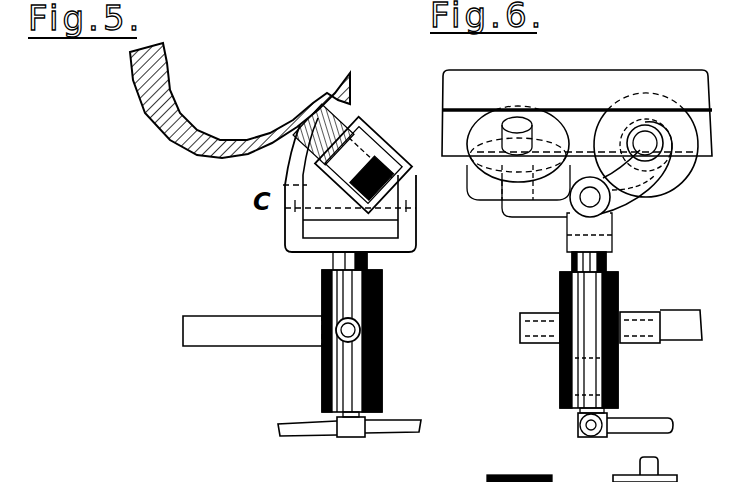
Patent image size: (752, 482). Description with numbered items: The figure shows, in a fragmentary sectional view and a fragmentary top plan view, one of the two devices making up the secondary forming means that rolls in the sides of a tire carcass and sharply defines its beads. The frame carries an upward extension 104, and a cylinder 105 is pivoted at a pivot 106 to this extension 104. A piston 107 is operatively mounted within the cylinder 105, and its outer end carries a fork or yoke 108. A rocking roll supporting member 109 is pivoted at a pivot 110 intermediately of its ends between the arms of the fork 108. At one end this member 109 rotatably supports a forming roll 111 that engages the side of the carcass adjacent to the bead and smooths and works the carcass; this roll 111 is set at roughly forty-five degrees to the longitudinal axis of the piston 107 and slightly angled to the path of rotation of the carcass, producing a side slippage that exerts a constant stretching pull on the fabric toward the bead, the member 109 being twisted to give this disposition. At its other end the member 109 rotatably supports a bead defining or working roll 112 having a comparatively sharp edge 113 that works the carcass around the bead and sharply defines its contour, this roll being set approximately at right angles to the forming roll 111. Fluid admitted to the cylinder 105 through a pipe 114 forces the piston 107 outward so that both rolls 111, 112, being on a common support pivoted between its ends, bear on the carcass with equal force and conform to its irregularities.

In FIG. 5, the upward extension 104 is at (270, 343).
In FIG. 6, the upward extension 104 is at (611, 326).
In FIG. 5, the cylinder 105 is at (386, 338).
In FIG. 6, the cylinder 105 is at (589, 340).
In FIG. 5, the pivot 106 is at (340, 322).
In FIG. 5, the piston 107 is at (372, 262).
In FIG. 6, the piston 107 is at (589, 262).
In FIG. 5, the fork or yoke 108 is at (417, 233).
In FIG. 6, the rocking roll supporting member 109 is at (533, 218).
In FIG. 6, the pivot 110 is at (613, 222).
In FIG. 5, the forming roll 111 is at (350, 112).
In FIG. 6, the forming roll 111 is at (493, 112).
In FIG. 6, the bead defining or working roll 112 is at (670, 172).
In FIG. 5, the sharp edge 113 is at (300, 162).
In FIG. 6, the sharp edge 113 is at (647, 100).
In FIG. 5, the pipe 114 is at (382, 424).
In FIG. 6, the pipe 114 is at (625, 422).